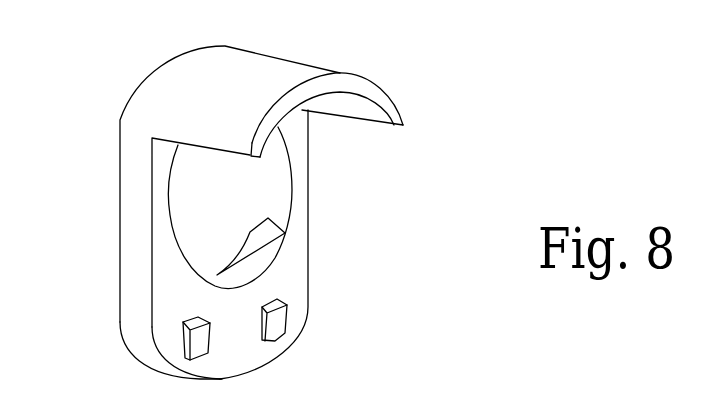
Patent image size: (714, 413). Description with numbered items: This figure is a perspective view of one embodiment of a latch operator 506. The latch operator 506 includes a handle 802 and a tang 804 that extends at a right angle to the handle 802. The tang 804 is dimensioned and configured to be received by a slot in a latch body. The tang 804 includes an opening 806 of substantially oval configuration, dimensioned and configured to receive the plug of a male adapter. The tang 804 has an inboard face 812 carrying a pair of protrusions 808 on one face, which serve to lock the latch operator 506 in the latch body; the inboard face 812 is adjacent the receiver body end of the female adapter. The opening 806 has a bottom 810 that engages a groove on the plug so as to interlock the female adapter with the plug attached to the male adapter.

The latch operator 506 is at (438, 90).
The handle 802 is at (306, 64).
The tang 804 is at (120, 188).
The opening 806 is at (236, 203).
The protrusions 808 is at (198, 358).
The bottom 810 is at (263, 250).
The inboard face 812 is at (177, 298).